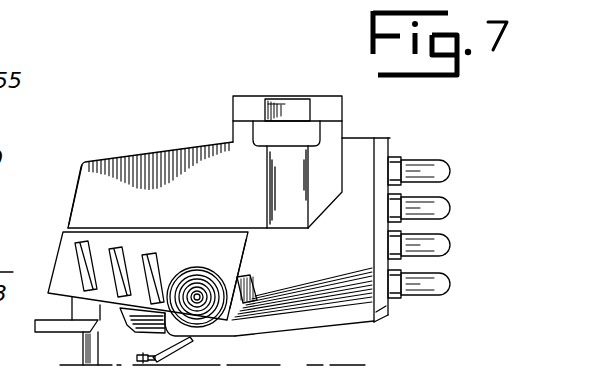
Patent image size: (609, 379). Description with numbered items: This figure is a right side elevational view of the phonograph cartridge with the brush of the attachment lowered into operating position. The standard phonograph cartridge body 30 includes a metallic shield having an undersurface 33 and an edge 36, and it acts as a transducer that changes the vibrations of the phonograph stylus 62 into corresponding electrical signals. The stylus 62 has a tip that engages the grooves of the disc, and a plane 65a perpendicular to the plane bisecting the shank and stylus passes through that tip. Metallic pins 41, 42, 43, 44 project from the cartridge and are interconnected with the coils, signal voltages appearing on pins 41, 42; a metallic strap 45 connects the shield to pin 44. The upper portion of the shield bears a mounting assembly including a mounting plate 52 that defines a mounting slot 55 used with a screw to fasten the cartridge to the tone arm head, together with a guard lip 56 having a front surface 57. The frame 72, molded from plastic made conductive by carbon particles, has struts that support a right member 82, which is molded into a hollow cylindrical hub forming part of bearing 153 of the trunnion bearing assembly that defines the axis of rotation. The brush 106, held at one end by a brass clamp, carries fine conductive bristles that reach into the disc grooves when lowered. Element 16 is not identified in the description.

The phonograph cartridge body 30 is at (70, 0).
The undersurface 33 is at (100, 0).
The edge 36 is at (384, 137).
The metallic pin 41 is at (442, 160).
The metallic pin 42 is at (449, 205).
The metallic pin 43 is at (450, 248).
The metallic pin 44 is at (452, 286).
The metallic strap 45 is at (393, 308).
The mounting plate 52 is at (240, 88).
The mounting slot 55 is at (304, 95).
The guard lip 56 is at (124, 148).
The front surface 57 is at (72, 202).
The phonograph stylus 62 is at (173, 357).
The plane 65a is at (281, 364).
The frame 72 is at (54, 252).
The right member 82 is at (245, 257).
The brush 106 is at (84, 349).
The bearing 153 is at (222, 276).
The bar 16 is at (33, 323).